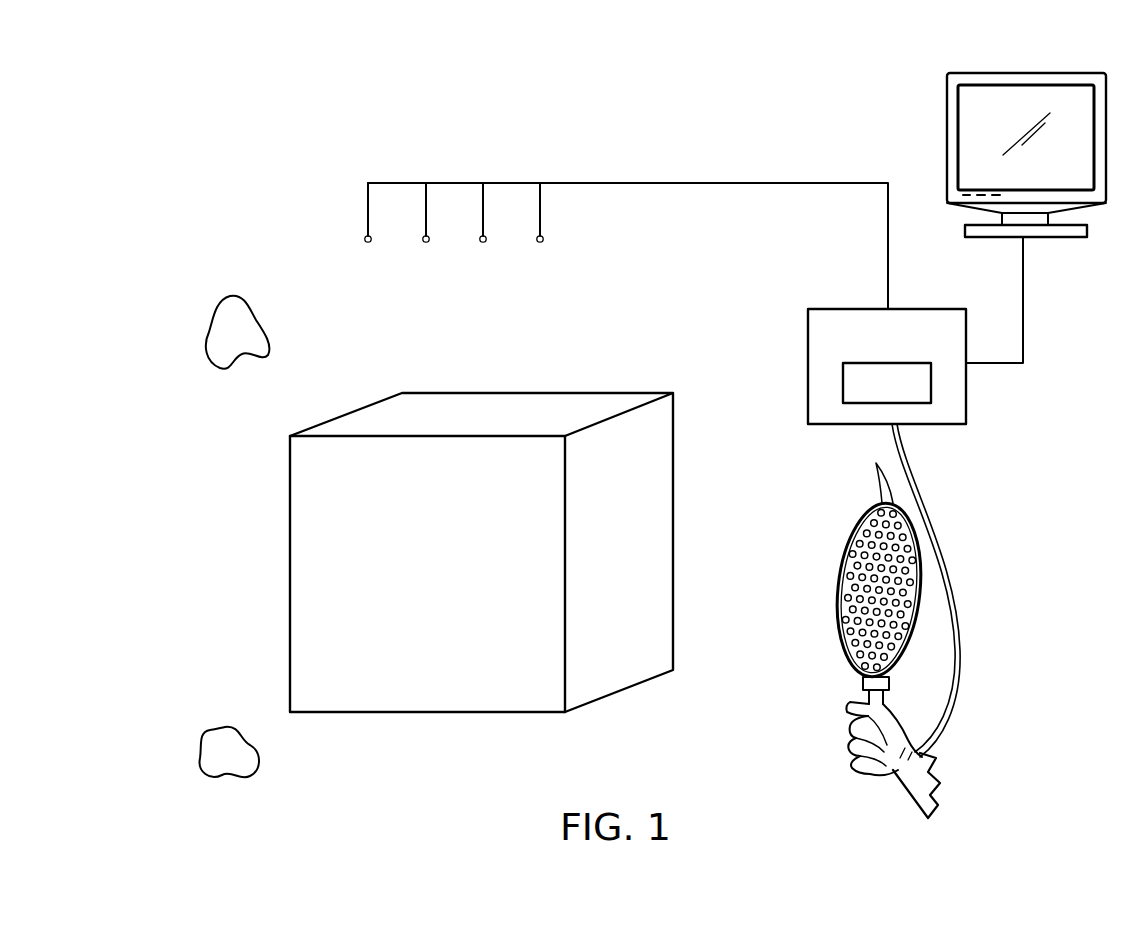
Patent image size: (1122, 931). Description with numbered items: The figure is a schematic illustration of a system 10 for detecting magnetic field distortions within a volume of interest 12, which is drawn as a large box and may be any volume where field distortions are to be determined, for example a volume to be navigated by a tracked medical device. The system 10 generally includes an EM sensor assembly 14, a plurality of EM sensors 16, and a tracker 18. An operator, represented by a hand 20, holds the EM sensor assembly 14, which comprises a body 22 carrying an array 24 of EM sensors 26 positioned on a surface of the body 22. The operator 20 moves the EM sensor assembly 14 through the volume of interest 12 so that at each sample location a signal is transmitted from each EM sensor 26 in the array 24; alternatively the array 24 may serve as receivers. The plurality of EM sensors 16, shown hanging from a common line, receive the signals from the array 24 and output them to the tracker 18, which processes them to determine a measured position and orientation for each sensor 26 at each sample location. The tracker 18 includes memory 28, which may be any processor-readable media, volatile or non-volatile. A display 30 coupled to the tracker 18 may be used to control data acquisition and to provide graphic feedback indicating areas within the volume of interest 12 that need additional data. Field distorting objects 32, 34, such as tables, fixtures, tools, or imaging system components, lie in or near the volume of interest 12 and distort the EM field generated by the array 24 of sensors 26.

The system 10 is at (385, 92).
The volume of interest 12 is at (487, 392).
The EM sensor assembly 14 is at (860, 590).
The plurality of EM sensors 16 is at (426, 243).
The tracker 18 is at (830, 308).
The hand 20 is at (906, 796).
The body 22 is at (841, 573).
The array 24 is at (866, 514).
The EM sensor 26 is at (876, 463).
The memory 28 is at (903, 396).
The display 30 is at (1050, 73).
The field distorting object 32 is at (218, 370).
The field distorting object 34 is at (240, 781).